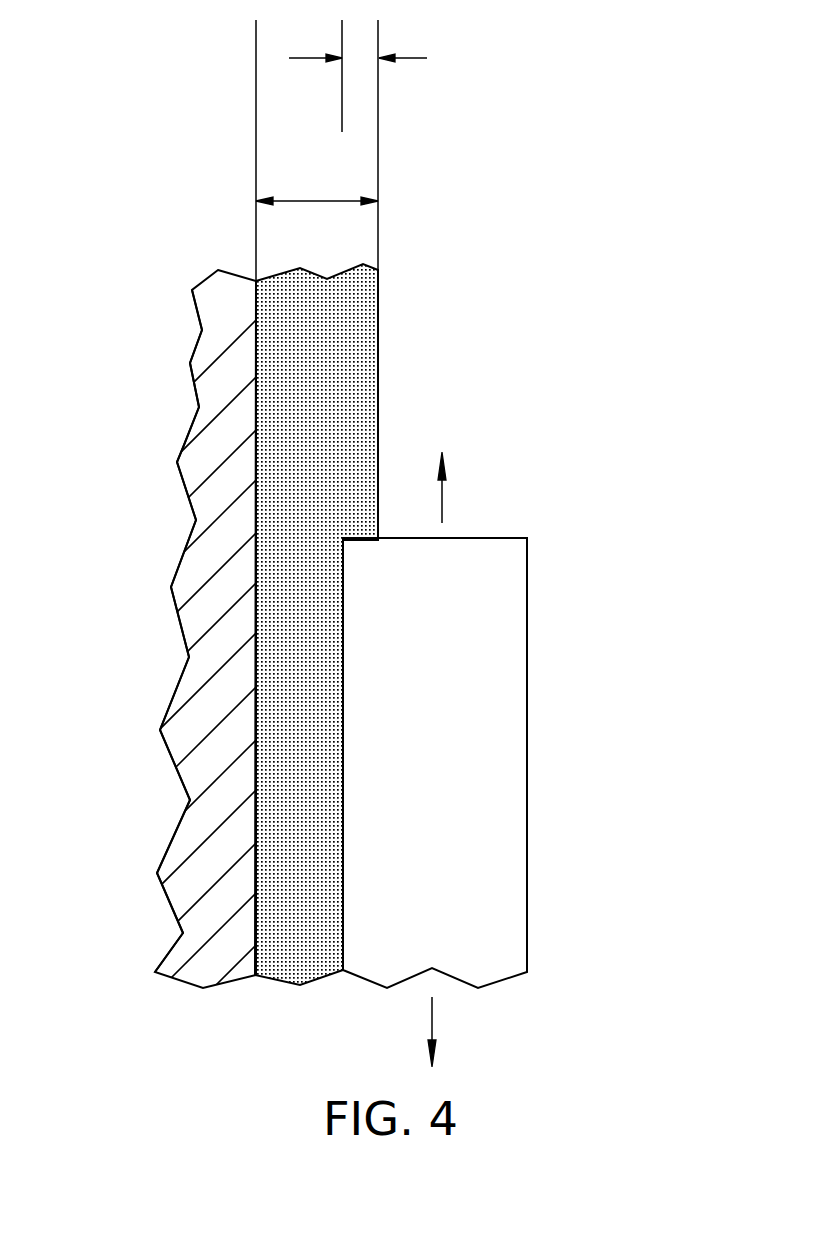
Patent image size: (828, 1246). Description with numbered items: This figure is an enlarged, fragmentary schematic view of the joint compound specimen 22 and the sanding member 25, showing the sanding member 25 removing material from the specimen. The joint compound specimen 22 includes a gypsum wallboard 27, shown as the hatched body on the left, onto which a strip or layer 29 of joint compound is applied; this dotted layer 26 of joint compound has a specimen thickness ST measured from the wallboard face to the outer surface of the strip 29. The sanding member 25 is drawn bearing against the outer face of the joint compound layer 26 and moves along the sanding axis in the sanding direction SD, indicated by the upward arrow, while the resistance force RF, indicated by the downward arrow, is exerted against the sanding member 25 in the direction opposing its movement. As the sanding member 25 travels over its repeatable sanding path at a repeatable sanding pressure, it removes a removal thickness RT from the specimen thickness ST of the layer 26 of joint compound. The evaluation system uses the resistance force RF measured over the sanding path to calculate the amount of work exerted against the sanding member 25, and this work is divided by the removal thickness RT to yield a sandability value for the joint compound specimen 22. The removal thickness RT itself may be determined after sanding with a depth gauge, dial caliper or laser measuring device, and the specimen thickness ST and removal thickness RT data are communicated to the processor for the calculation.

The joint compound specimen 22 is at (213, 345).
The sanding member 25 is at (475, 690).
The layer of joint compound 26 is at (337, 388).
The gypsum wallboard 27 is at (195, 473).
The strip of joint compound 29 is at (378, 302).
The specimen thickness ST is at (317, 150).
The removal thickness RT is at (358, 76).
The sanding direction SD is at (442, 497).
The resistance force RF is at (432, 1025).